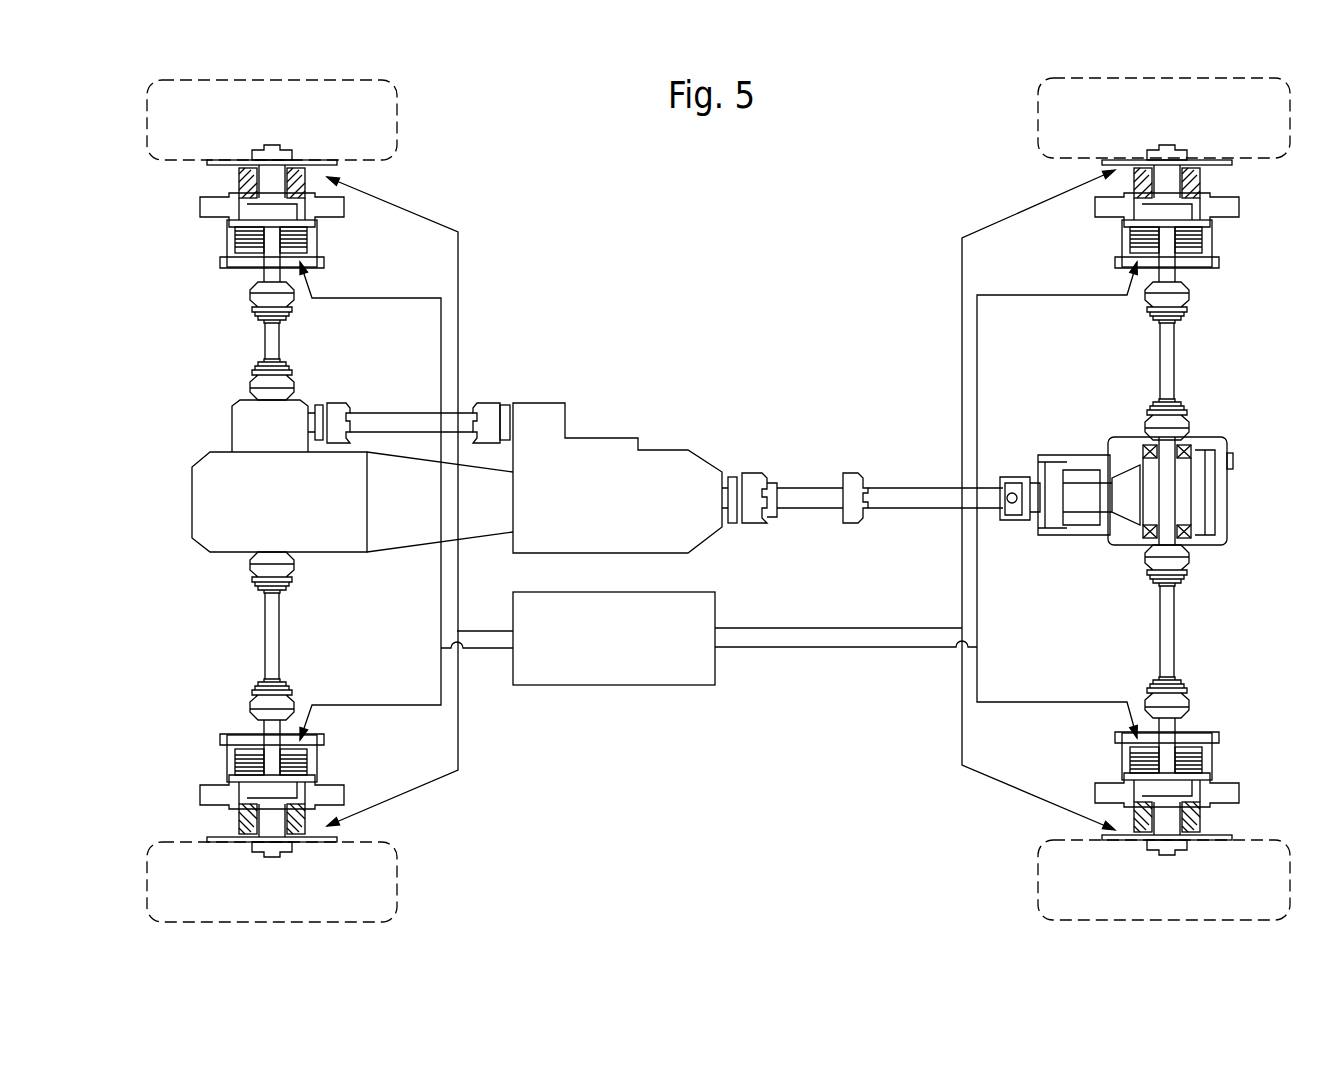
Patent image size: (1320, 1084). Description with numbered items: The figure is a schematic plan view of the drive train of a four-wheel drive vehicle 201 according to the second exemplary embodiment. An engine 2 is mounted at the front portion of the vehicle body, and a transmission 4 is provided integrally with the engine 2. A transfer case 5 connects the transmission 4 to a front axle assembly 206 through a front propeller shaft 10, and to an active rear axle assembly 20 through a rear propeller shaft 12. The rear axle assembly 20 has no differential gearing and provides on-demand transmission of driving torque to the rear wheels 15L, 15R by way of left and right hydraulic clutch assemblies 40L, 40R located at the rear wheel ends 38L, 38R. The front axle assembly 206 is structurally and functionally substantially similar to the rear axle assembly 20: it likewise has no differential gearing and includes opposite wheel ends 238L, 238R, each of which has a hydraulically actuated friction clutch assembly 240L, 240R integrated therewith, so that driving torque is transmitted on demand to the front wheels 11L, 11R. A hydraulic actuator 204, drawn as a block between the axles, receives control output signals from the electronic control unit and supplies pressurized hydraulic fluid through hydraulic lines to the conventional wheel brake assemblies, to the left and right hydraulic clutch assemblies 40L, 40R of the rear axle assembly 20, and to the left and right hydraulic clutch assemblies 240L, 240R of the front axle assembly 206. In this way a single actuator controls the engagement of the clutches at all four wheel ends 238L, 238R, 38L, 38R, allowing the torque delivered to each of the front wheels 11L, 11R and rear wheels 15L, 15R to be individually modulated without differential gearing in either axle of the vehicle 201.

The engine 2 is at (200, 497).
The transmission 4 is at (390, 540).
The transfer case 5 is at (660, 455).
The front propeller shaft 10 is at (385, 413).
The rear propeller shaft 12 is at (916, 490).
The rear axle assembly 20 is at (1255, 412).
The front wheel 11R is at (377, 122).
The front wheel 11L is at (377, 884).
The rear wheel 15R is at (1057, 120).
The rear wheel 15L is at (1060, 882).
The rear right wheel hub 38R is at (1232, 180).
The rear left wheel hub 38L is at (1232, 820).
The hydraulic clutch assembly 40R is at (1220, 240).
The hydraulic clutch assembly 40L is at (1220, 760).
The wheel end 238R is at (200, 182).
The wheel end 238L is at (200, 821).
The hydraulically actuated friction clutch assembly 240R is at (214, 241).
The hydraulically actuated friction clutch assembly 240L is at (214, 762).
The four-wheel drive vehicle 201 is at (762, 248).
The hydraulic actuator 204 is at (717, 612).
The front axle assembly 206 is at (222, 591).